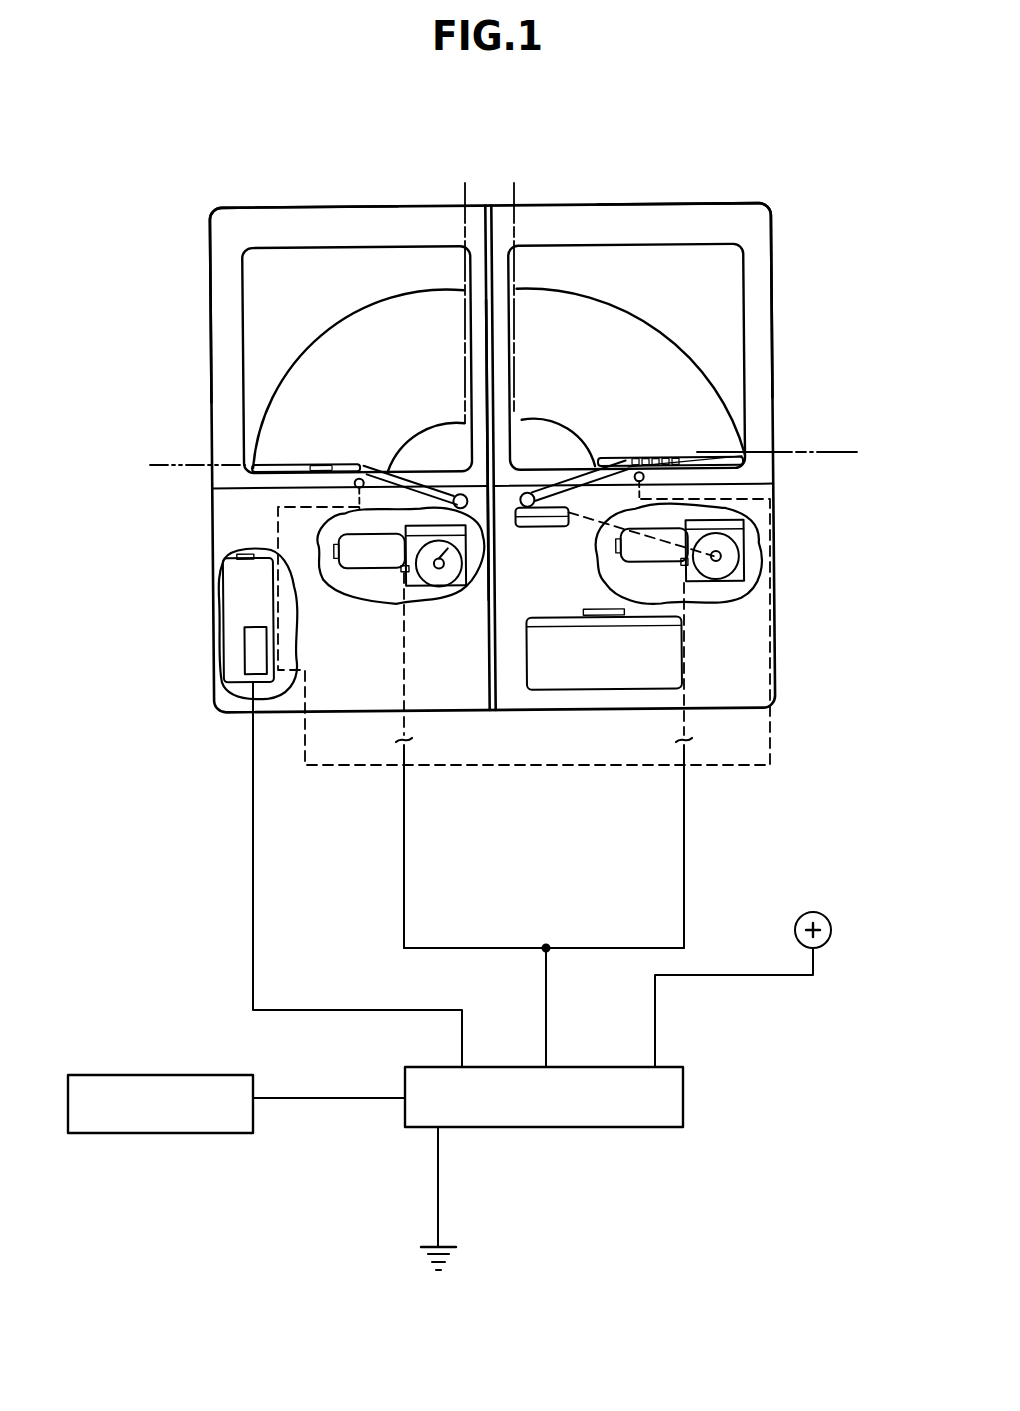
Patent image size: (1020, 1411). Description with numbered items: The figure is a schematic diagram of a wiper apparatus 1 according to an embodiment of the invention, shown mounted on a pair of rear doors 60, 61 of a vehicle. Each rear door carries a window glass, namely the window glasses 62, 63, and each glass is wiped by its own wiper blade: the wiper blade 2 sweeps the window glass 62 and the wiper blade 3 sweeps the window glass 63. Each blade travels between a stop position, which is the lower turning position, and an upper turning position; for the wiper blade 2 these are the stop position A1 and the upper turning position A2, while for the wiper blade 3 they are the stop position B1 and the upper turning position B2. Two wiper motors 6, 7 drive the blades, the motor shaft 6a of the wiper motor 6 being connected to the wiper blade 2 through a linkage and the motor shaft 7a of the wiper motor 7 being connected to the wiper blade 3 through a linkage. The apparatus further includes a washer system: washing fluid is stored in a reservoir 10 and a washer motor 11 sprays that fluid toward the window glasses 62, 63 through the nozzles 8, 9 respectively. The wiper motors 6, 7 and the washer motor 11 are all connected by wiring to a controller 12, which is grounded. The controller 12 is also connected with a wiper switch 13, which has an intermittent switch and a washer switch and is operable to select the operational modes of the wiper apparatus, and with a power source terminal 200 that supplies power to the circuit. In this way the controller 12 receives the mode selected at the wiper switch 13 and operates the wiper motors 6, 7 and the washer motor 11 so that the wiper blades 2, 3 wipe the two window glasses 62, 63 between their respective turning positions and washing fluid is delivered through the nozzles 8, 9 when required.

The wiper apparatus 1 is at (636, 188).
The wiper blade 2 is at (278, 466).
The wiper blade 3 is at (697, 456).
The wiper motor 6 is at (367, 536).
The motor shaft 6a is at (433, 565).
The wiper motor 7 is at (755, 543).
The motor shaft 7a is at (720, 560).
The nozzle 8 is at (354, 484).
The nozzle 9 is at (645, 476).
The reservoir 10 is at (230, 587).
The washer motor 11 is at (245, 651).
The controller 12 is at (572, 1127).
The wiper switch 13 is at (140, 1135).
The rear door 60 is at (222, 225).
The rear door 61 is at (760, 224).
The window glass 62 is at (250, 268).
The window glass 63 is at (728, 271).
The power source terminal 200 is at (813, 912).
The stop position A1 is at (168, 462).
The upper turning position A2 is at (464, 193).
The stop position B1 is at (820, 452).
The upper turning position B2 is at (515, 193).